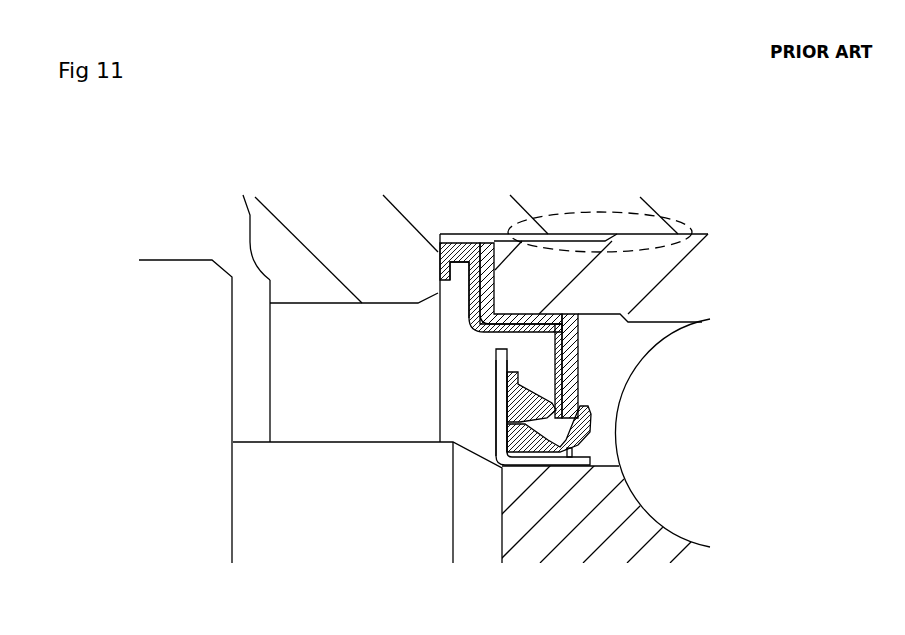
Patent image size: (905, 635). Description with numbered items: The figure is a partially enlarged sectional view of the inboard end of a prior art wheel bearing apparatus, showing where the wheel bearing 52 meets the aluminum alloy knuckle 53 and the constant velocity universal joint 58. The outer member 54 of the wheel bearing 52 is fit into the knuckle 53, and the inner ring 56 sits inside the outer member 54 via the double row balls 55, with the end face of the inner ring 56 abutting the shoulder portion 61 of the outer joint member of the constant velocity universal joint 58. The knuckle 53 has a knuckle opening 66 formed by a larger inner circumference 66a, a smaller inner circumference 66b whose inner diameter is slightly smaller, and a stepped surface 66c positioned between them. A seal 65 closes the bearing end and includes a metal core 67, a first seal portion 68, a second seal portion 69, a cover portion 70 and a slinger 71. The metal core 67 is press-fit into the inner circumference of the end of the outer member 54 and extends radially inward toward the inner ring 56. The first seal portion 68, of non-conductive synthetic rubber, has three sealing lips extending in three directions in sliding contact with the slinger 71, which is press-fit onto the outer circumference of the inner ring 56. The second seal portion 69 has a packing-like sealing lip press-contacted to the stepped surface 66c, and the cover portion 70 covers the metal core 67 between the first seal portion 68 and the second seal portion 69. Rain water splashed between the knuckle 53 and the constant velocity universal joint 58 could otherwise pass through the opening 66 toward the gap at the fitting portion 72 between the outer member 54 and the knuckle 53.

The wheel bearing 52 is at (683, 233).
The knuckle 53 is at (327, 213).
The outer member 54 is at (625, 252).
The balls 55 is at (665, 393).
The inner ring 56 is at (563, 528).
The constant velocity universal joint 58 is at (160, 247).
The shoulder portion 61 is at (343, 442).
The seal 65 is at (501, 301).
The knuckle opening 66 is at (297, 372).
The larger inner circumference 66a is at (483, 233).
The smaller inner circumference 66b is at (350, 305).
The stepped surface 66c is at (450, 236).
The metal core 67 is at (580, 355).
The first seal portion 68 is at (570, 447).
The second seal portion 69 is at (454, 284).
The cover portion 70 is at (526, 403).
The slinger 71 is at (495, 403).
The fitting portion 72 is at (595, 212).